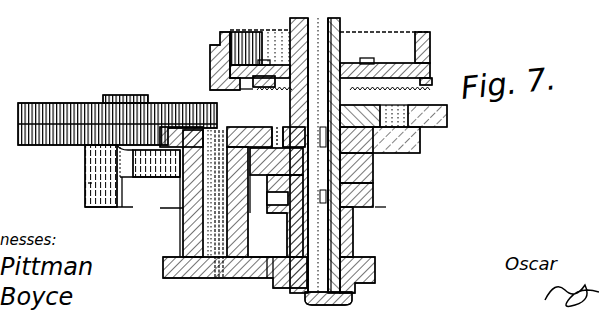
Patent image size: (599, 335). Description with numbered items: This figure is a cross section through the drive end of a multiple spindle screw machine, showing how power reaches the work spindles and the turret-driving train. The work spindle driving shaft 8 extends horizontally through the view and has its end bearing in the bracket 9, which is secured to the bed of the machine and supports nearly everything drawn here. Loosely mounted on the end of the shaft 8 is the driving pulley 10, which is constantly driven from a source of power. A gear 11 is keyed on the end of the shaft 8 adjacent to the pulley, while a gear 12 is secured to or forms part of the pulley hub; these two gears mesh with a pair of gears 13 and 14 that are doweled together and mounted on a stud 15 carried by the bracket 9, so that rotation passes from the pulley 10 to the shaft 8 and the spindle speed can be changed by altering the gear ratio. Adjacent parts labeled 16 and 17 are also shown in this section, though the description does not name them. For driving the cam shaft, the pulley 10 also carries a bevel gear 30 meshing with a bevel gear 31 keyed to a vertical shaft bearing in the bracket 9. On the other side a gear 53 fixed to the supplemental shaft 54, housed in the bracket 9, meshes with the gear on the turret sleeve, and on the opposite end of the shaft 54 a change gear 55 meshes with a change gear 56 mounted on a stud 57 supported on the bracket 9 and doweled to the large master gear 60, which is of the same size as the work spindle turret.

The work spindle driving shaft 8 is at (354, 241).
The bracket 9 is at (90, 183).
The driving pulley 10 is at (268, 46).
The gear 11 is at (270, 127).
The gear 12 is at (266, 98).
The gear 13 is at (424, 150).
The gear 14 is at (446, 118).
The stud 15 is at (431, 84).
The hub 16 is at (398, 166).
The projection 17 is at (374, 207).
The bevel gear 30 is at (392, 62).
The bevel gear 31 is at (378, 252).
The gear 53 is at (170, 258).
The supplemental shaft 54 is at (200, 225).
The change gear 55 is at (232, 127).
The change gear 56 is at (62, 139).
The stud 57 is at (127, 90).
The master gear 60 is at (49, 107).